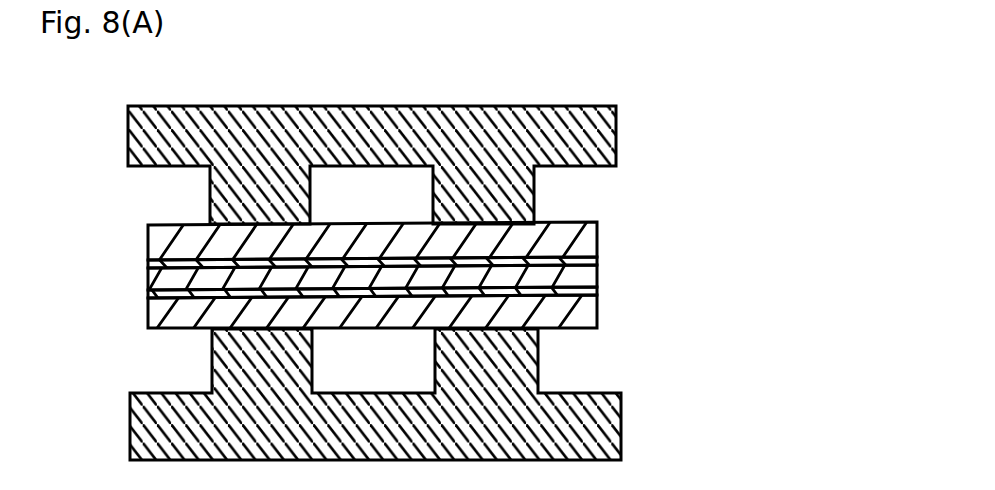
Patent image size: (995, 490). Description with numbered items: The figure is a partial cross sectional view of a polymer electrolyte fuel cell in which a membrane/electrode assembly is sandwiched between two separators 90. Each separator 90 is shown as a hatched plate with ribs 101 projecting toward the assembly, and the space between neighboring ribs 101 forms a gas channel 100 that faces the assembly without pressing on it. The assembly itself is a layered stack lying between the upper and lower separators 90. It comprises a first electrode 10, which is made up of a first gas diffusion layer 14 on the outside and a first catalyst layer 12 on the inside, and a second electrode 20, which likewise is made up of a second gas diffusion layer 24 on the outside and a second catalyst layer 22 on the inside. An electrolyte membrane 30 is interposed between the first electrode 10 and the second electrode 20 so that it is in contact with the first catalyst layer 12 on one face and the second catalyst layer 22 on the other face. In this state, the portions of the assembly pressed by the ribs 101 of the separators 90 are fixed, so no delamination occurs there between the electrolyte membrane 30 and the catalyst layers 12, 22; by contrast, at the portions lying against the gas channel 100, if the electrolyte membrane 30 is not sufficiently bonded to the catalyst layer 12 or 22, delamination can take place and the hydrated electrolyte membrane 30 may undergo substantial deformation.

The separator 90 is at (560, 134).
The rib 101 is at (222, 208).
The gas channel 100 is at (364, 187).
The first electrode 10 is at (471, 230).
The first gas diffusion layer 14 is at (597, 242).
The first catalyst layer 12 is at (597, 257).
The electrolyte membrane 30 is at (597, 267).
The second electrode 20 is at (472, 336).
The second catalyst layer 22 is at (597, 291).
The second gas diffusion layer 24 is at (597, 322).